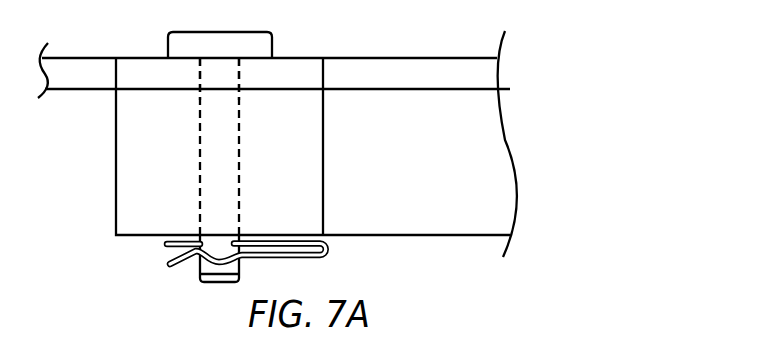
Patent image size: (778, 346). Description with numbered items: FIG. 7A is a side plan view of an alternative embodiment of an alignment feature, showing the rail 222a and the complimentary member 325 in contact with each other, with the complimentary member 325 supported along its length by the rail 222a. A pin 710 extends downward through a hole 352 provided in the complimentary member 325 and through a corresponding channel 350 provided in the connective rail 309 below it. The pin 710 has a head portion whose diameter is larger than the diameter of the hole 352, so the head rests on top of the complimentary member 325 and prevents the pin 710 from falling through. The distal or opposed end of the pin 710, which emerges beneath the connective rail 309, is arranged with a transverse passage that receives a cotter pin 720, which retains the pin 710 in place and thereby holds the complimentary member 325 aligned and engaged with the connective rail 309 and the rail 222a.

The hole 352 is at (221, 75).
The pin 710 is at (242, 32).
The complimentary member 325 is at (290, 69).
The rail 222a is at (465, 131).
The connective rail 309 is at (136, 152).
The channel 350 is at (238, 155).
The cotter pin 720 is at (318, 257).